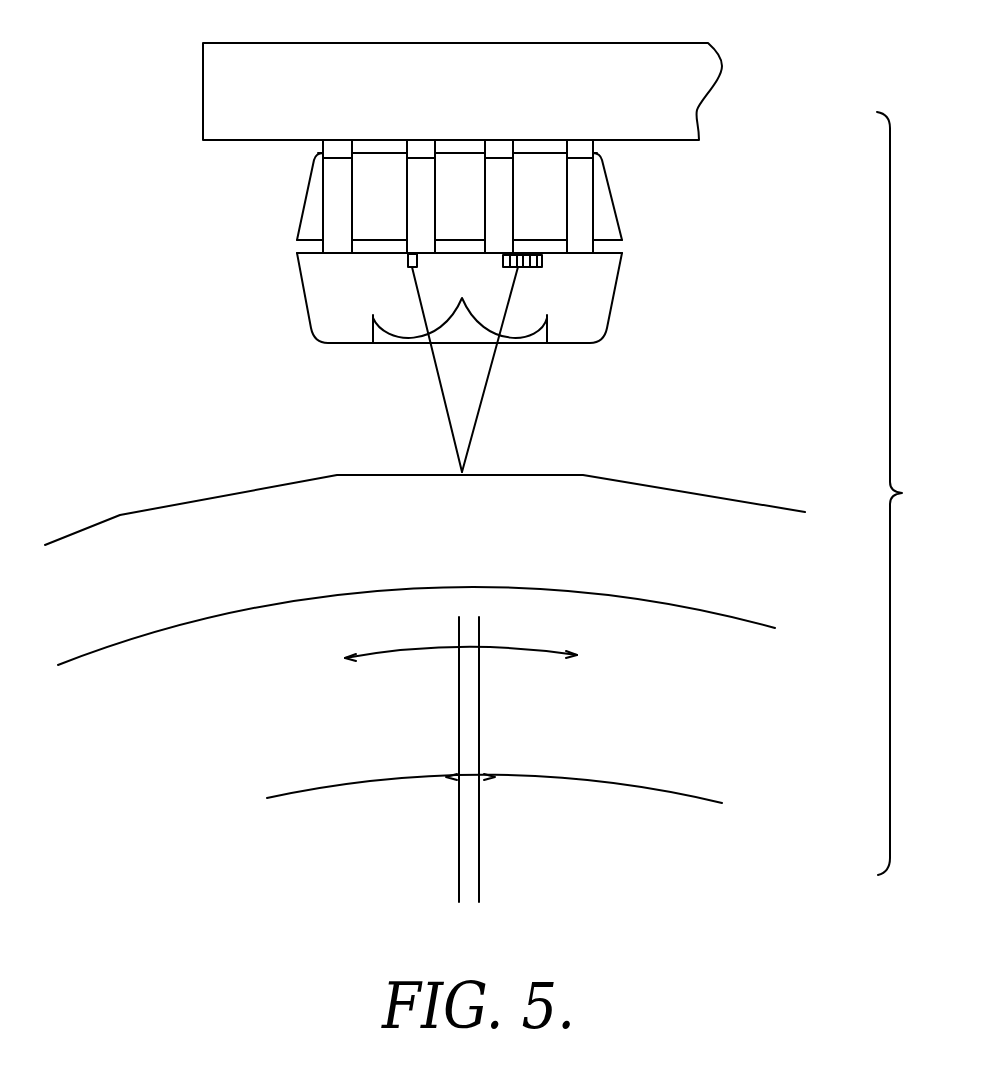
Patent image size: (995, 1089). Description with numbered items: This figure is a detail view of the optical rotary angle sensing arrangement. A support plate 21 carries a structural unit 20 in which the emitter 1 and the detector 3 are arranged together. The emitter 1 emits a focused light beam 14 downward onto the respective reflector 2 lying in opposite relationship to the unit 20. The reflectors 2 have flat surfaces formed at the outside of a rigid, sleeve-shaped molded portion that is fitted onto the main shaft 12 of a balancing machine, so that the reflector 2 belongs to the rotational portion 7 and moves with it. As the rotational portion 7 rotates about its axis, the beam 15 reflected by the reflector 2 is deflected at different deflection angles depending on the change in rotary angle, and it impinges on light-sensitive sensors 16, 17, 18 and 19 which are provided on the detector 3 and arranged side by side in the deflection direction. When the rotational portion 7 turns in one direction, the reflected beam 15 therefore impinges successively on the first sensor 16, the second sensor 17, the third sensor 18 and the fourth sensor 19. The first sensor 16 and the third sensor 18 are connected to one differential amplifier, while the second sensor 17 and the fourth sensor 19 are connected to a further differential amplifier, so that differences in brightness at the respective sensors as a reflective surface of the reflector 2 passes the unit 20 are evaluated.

The support plate 21 is at (285, 45).
The structural unit 20 is at (299, 258).
The emitter 1 is at (407, 262).
The first sensor 16 is at (536, 254).
The second sensor 17 is at (517, 254).
The third sensor 18 is at (532, 268).
The fourth sensor 19 is at (542, 262).
The detector 3 is at (521, 268).
The focused light beam 14 is at (441, 386).
The reflected beam 15 is at (492, 367).
The reflector 2 is at (518, 461).
The rotational portion 7 is at (416, 744).
The main shaft 12 is at (470, 759).